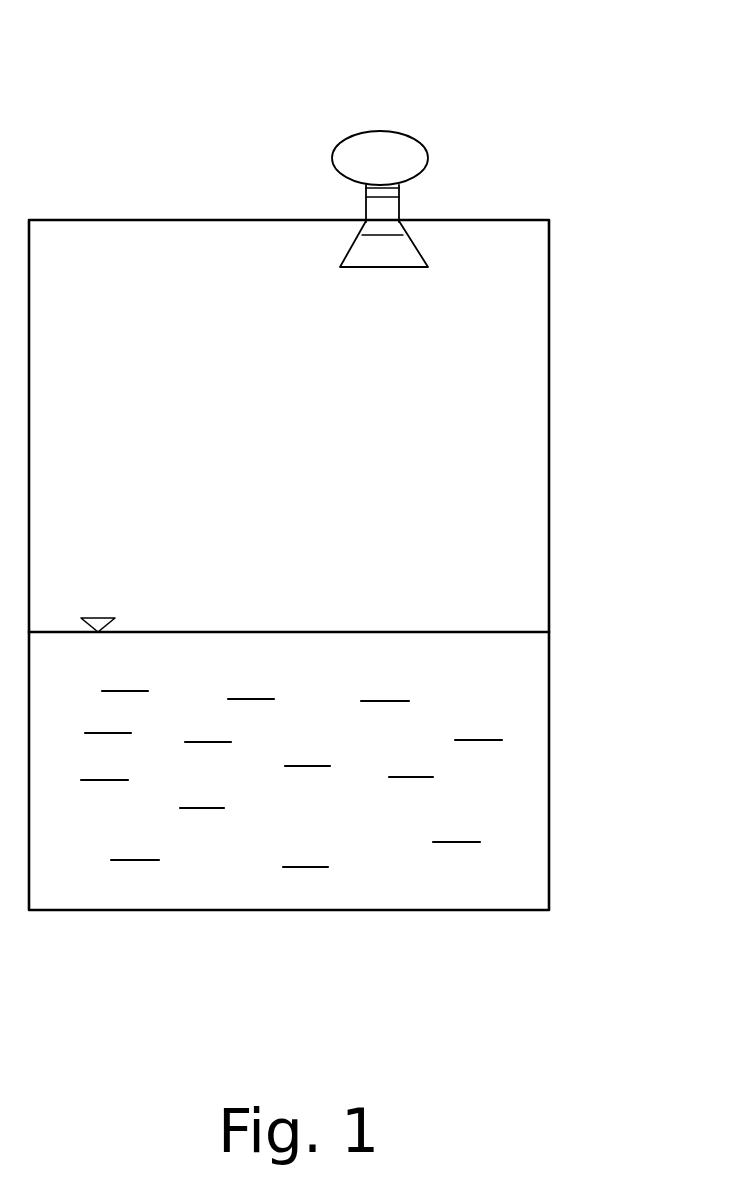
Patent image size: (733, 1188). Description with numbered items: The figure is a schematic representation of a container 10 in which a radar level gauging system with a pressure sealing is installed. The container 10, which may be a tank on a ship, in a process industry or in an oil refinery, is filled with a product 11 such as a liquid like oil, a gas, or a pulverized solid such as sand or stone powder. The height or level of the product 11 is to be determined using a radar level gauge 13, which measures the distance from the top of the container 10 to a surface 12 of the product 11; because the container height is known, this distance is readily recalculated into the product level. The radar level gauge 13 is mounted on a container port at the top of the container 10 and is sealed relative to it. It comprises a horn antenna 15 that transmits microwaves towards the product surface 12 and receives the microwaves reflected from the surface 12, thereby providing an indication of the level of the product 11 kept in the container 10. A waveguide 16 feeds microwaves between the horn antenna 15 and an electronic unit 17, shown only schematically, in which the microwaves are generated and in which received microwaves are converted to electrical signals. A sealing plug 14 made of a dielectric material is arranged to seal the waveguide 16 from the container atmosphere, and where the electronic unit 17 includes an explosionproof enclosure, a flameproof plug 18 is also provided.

The container 10 is at (549, 320).
The product 11 is at (524, 689).
The surface 12 is at (520, 631).
The radar level gauge 13 is at (450, 97).
The sealing plug 14 is at (365, 220).
The horn antenna 15 is at (417, 247).
The waveguide 16 is at (400, 213).
The electronic unit 17 is at (355, 145).
The flameproof plug 18 is at (357, 185).